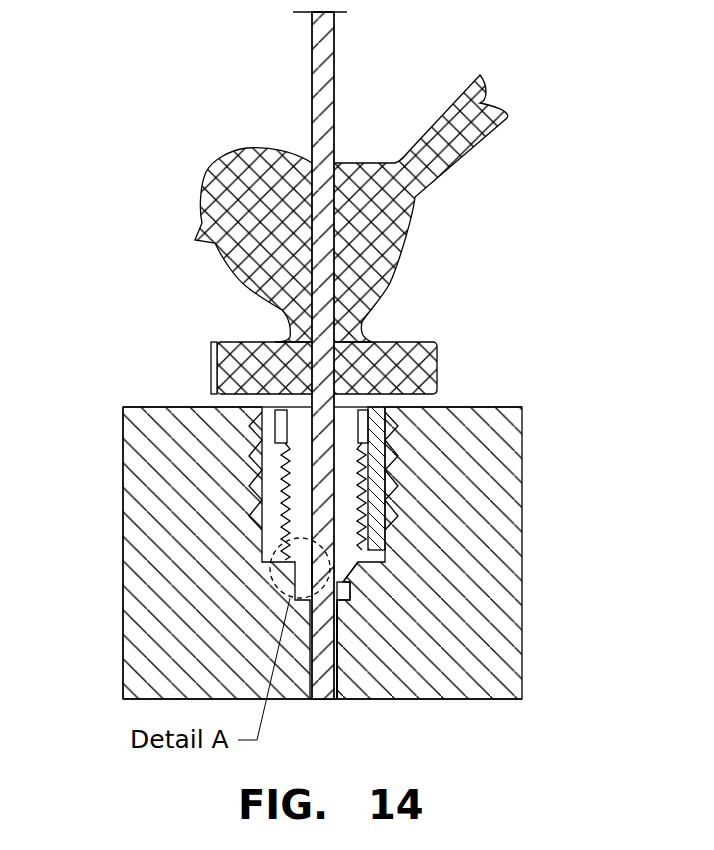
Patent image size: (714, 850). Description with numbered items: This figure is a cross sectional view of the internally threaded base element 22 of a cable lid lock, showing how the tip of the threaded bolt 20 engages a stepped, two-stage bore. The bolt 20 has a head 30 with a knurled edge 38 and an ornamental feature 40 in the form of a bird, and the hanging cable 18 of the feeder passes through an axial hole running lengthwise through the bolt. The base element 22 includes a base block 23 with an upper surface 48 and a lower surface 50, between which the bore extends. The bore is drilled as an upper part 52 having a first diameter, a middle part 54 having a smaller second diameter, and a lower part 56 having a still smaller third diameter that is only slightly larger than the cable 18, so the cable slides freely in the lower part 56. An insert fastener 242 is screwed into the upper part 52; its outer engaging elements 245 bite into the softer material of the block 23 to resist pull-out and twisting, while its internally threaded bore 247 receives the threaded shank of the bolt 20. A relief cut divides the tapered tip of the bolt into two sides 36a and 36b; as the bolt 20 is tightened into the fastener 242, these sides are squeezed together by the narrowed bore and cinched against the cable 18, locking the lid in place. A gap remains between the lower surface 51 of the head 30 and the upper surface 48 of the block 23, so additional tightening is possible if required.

The hanging cable 18 is at (330, 55).
The ornamental feature 40 is at (220, 185).
The knurled edge 38 is at (212, 350).
The head 30 is at (437, 357).
The upper surface 48 is at (138, 407).
The threaded bolt 20 is at (300, 430).
The lower surface of the bolt head 51 is at (432, 407).
The base block 23 is at (130, 457).
The internally threaded base element 22 is at (98, 548).
The fastener 242 is at (430, 450).
The engaging elements 245 is at (430, 490).
The internally threaded bore 247 is at (430, 538).
The upper part of the bore 52 is at (262, 540).
The side of the tapered tip 36a is at (270, 590).
The side of the tapered tip 36b is at (352, 590).
The lower part of the bore 56 is at (345, 665).
The middle part of the bore 54 is at (348, 605).
The lower surface 50 is at (460, 710).